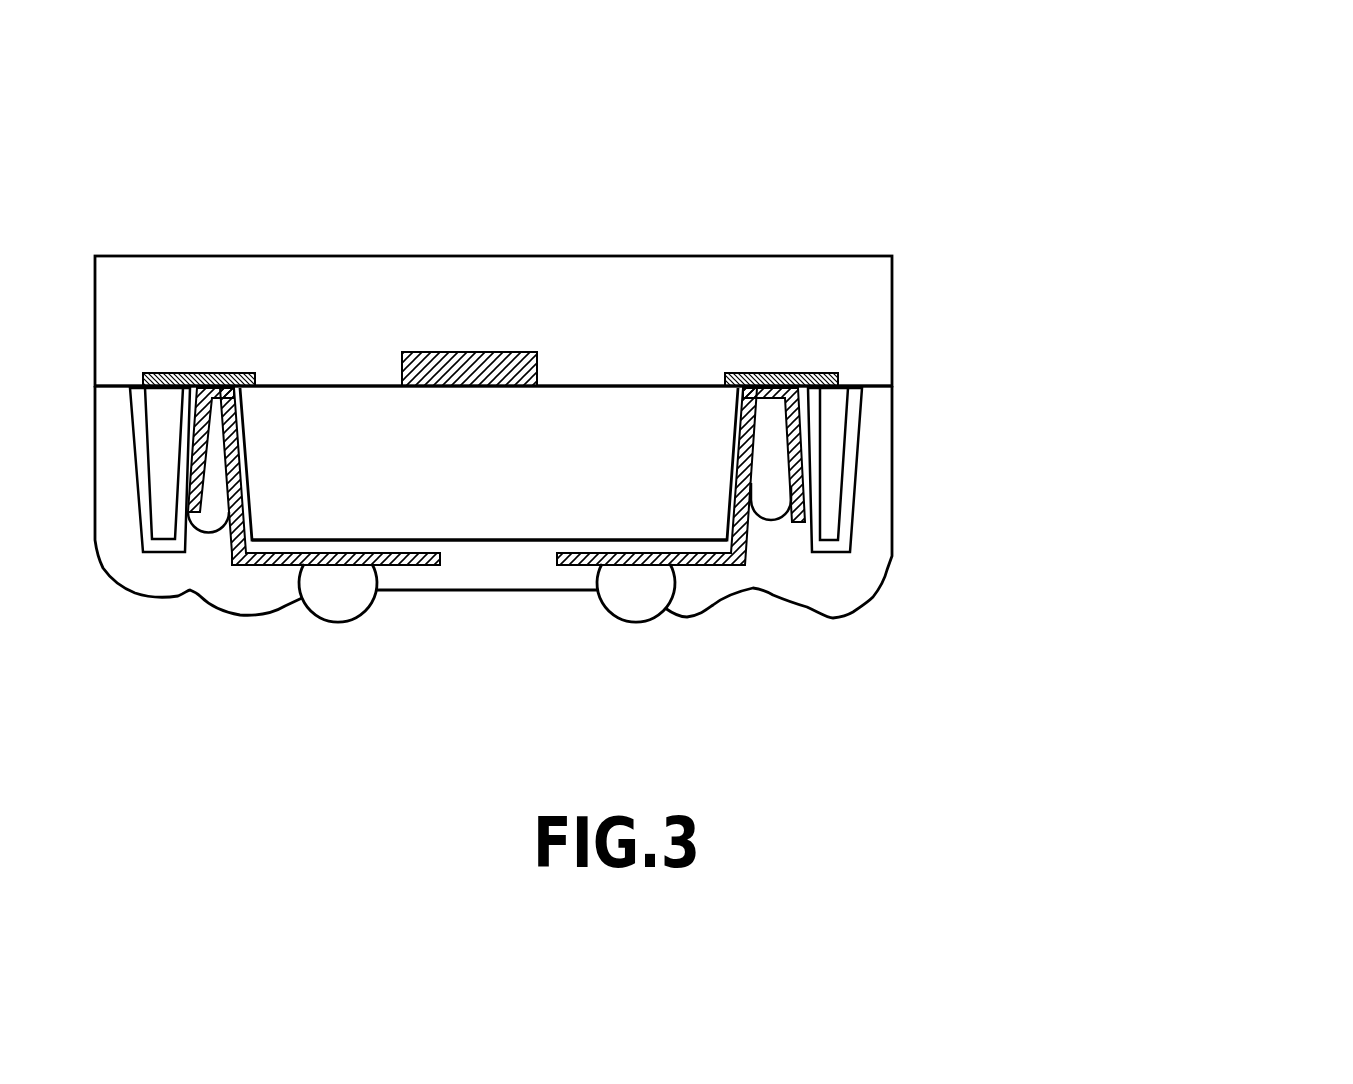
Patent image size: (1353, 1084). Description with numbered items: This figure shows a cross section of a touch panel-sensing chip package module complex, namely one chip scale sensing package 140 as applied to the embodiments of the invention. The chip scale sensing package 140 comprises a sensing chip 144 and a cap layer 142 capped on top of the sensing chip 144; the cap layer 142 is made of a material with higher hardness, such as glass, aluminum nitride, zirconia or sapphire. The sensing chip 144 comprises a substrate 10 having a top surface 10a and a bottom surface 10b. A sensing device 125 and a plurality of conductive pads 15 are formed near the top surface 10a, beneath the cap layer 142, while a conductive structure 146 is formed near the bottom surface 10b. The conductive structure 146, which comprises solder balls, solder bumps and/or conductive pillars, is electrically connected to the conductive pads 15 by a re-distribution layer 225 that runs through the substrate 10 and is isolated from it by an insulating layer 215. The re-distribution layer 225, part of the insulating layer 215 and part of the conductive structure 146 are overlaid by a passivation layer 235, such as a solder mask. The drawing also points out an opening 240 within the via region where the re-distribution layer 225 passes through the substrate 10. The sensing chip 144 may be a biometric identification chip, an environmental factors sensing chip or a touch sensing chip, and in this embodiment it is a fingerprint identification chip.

The substrate 10 is at (476, 474).
The top surface 10a is at (322, 378).
The bottom surface 10b is at (392, 528).
The conductive pads 15 is at (783, 373).
The sensing device 125 is at (505, 373).
The cap layer 142 is at (663, 287).
The sensing chip 144 is at (1045, 262).
The chip scale sensing package 140 is at (1192, 187).
The conductive structure 146 is at (322, 593).
The passivation layer 235 is at (863, 468).
The insulating layer 215 is at (858, 489).
The re-distribution layer 225 is at (784, 522).
The via opening 240 is at (773, 494).